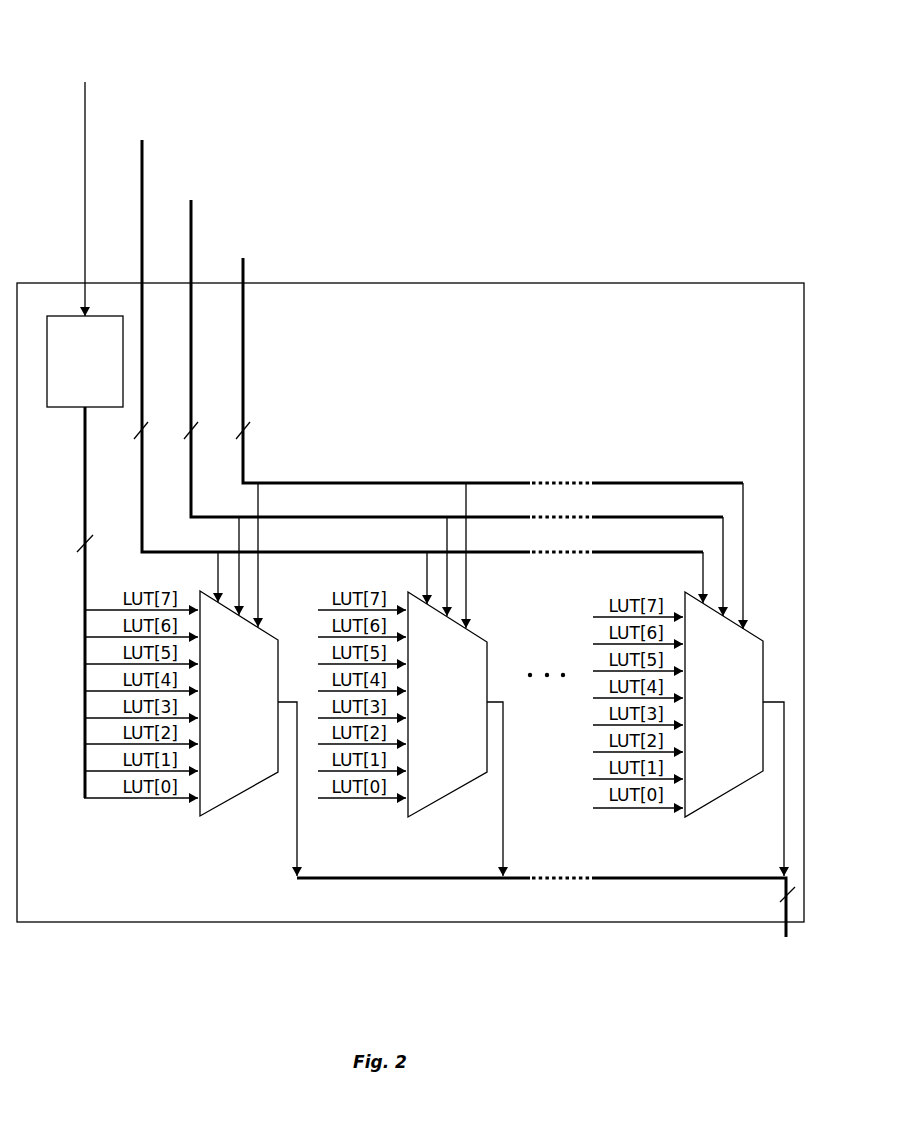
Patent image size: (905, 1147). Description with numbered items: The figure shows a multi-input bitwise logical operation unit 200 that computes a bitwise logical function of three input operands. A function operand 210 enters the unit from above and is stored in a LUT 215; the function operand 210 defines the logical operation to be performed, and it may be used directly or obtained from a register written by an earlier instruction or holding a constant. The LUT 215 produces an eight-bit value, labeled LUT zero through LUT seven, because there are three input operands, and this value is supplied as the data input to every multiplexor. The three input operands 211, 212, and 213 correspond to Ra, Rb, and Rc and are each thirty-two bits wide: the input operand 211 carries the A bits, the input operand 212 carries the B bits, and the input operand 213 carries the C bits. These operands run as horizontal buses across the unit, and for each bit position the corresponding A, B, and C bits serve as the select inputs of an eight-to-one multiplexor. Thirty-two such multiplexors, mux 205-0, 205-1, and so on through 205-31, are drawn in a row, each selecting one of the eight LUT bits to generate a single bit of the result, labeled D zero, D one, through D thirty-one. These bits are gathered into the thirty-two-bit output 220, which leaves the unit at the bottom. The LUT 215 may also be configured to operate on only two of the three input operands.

The multi-input bitwise logical operation unit 200 is at (410, 602).
The function operand 210 is at (85, 161).
The input operand 211 is at (409, 331).
The input operand 212 is at (446, 346).
The input operand 213 is at (487, 358).
The LUT 215 is at (85, 557).
The multiplexor 205-0 is at (239, 649).
The multiplexor 205-1 is at (447, 650).
The multiplexor 205-31 is at (724, 650).
The output 220 is at (534, 844).